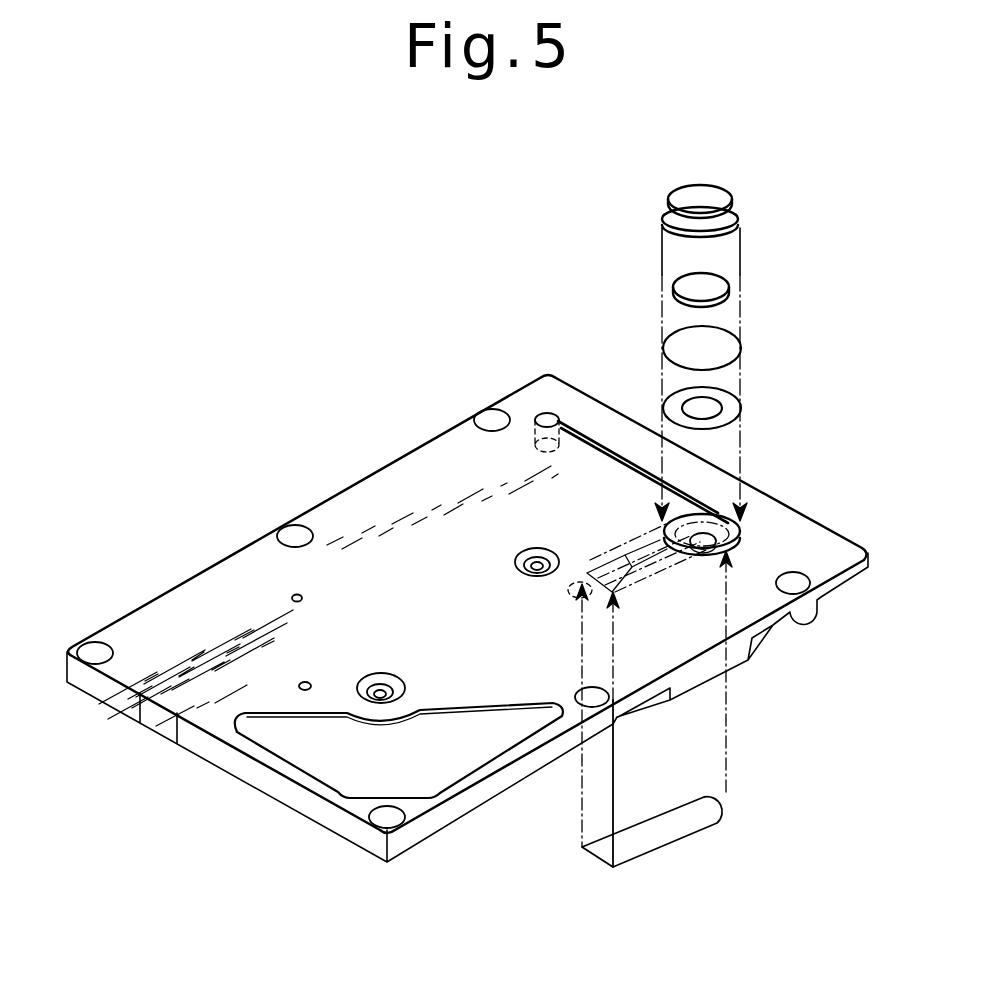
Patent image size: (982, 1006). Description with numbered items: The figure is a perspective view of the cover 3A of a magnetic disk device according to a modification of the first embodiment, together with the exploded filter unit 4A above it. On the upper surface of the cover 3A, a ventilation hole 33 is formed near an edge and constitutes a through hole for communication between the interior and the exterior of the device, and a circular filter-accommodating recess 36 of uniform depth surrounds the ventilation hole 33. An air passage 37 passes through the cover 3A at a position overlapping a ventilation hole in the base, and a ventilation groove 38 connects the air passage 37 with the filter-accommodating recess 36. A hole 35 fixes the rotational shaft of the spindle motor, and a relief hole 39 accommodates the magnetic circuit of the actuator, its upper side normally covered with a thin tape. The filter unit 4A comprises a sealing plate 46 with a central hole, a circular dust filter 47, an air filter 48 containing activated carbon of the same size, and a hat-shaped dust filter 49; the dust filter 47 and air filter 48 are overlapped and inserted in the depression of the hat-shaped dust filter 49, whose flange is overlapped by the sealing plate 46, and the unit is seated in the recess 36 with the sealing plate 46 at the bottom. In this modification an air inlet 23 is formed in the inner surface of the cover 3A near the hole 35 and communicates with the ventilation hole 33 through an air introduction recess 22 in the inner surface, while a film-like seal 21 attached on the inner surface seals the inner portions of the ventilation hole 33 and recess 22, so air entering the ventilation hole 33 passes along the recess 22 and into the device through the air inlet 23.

The cover 3A is at (840, 524).
The filter unit 4A is at (822, 182).
The film-like seal 21 is at (668, 843).
The air introduction recess 22 is at (622, 553).
The air inlet 23 is at (570, 604).
The ventilation hole 33 is at (706, 550).
The hole 35 is at (528, 568).
The filter-accommodating recess 36 is at (738, 538).
The air passage 37 is at (543, 414).
The ventilation groove 38 is at (603, 447).
The relief hole 39 is at (409, 770).
The sealing plate 46 is at (733, 410).
The dust filter 47 is at (728, 352).
The air filter 48 is at (718, 290).
The hat-shaped dust filter 49 is at (722, 201).